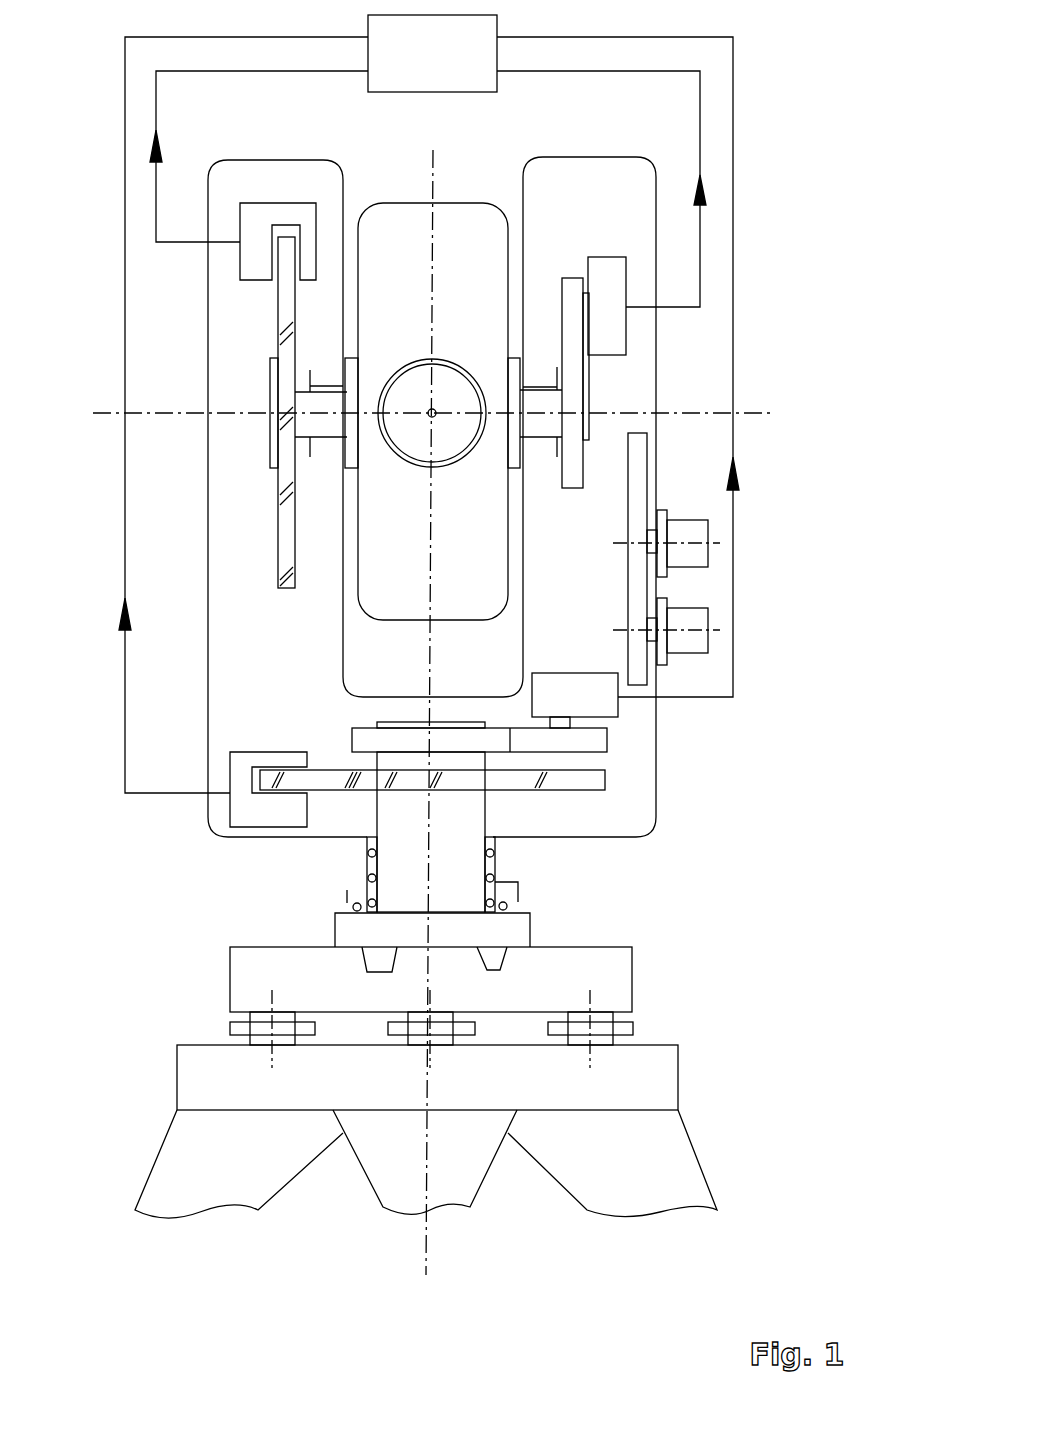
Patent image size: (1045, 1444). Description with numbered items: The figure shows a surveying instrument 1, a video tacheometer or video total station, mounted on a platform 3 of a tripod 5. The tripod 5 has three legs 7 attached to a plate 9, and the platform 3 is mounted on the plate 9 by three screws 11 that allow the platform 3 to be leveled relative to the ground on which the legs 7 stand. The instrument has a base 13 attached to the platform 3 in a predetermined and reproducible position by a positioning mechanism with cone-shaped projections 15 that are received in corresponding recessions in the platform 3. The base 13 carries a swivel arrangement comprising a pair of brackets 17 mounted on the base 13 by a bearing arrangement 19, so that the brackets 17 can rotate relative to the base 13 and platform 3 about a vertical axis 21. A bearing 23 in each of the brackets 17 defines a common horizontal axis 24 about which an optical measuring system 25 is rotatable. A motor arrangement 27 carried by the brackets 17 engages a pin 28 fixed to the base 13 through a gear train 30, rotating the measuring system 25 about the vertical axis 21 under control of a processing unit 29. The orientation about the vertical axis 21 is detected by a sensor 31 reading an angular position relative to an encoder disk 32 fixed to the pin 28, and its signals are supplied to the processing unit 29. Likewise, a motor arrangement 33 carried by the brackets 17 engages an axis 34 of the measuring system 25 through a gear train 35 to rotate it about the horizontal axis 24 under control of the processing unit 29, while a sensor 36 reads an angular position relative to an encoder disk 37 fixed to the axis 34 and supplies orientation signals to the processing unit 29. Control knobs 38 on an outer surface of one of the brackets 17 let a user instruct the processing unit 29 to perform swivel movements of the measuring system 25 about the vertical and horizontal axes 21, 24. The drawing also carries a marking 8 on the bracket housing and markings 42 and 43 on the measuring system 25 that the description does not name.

The surveying instrument 1 is at (872, 167).
The platform 3 is at (634, 947).
The tripod 5 is at (510, 1157).
The legs 7 is at (282, 1190).
The housing 8 is at (657, 733).
The plate 9 is at (680, 1072).
The screws 11 is at (240, 1022).
The base 13 is at (533, 927).
The cone-shaped projections 15 is at (480, 974).
The brackets 17 is at (425, 497).
The bearing arrangement 19 is at (340, 902).
The vertical axis 21 is at (423, 1248).
The bearing 23 is at (320, 387).
The horizontal axis 24 is at (755, 412).
The optical measuring system 25 is at (467, 203).
The motor arrangement 27 is at (560, 678).
The pin 28 is at (392, 868).
The processing unit 29 is at (460, 80).
The gear train 30 is at (347, 743).
The sensor 31 is at (240, 827).
The encoder disk 32 is at (605, 780).
The motor arrangement 33 is at (612, 257).
The axis 34 is at (308, 440).
The gear train 35 is at (583, 368).
The sensor 36 is at (248, 282).
The encoder disk 37 is at (278, 566).
The control knobs 38 is at (700, 560).
The center point 42 is at (435, 416).
The ring 43 is at (462, 372).